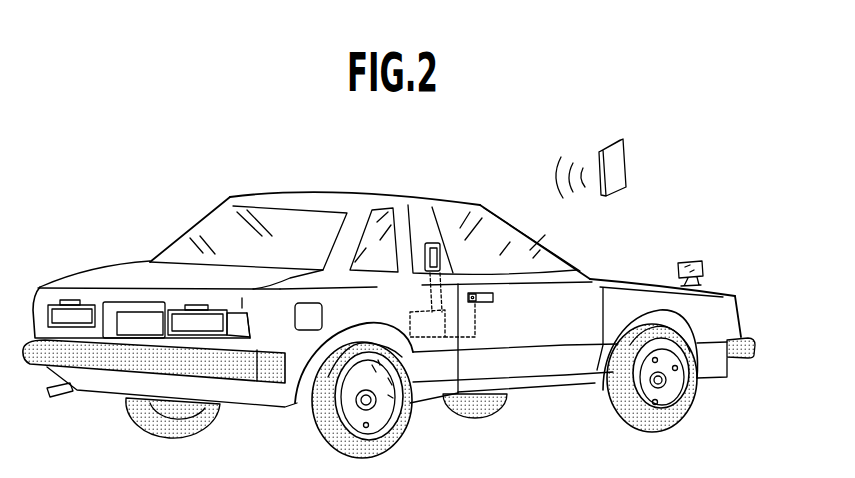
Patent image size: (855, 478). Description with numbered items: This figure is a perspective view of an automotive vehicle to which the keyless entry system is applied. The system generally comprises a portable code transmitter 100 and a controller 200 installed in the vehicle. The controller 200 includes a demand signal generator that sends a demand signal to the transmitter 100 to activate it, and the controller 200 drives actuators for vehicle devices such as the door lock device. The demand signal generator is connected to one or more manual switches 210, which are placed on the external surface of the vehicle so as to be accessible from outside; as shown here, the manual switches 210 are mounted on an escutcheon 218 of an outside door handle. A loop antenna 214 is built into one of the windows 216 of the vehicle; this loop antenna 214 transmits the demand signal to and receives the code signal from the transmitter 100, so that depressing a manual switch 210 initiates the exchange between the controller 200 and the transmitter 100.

The code transmitter 100 is at (628, 165).
The controller 200 is at (410, 313).
The manual switch 210 is at (475, 293).
The loop antenna 214 is at (443, 247).
The window 216 is at (423, 214).
The escutcheon 218 is at (490, 303).